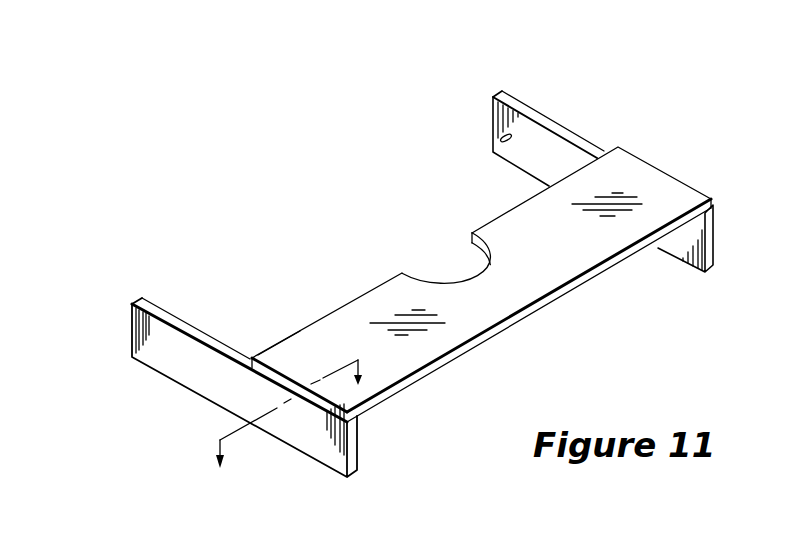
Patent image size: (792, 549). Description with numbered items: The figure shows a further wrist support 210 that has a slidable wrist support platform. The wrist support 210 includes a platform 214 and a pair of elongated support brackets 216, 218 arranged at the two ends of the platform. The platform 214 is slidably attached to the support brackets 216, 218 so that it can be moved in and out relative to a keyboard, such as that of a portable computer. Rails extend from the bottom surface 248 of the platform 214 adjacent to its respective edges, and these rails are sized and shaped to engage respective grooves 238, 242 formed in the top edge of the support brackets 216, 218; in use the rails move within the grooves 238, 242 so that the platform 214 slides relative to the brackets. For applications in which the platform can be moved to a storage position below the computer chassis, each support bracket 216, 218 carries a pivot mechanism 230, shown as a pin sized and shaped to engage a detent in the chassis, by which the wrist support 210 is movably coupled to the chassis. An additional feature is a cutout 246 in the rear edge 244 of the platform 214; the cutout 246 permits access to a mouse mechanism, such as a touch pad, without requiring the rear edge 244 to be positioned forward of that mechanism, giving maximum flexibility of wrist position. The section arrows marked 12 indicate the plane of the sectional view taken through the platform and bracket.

The wrist support 210 is at (585, 92).
The platform 214 is at (640, 175).
The support bracket 216 is at (156, 304).
The support bracket 218 is at (531, 109).
The pivot mechanism 230 is at (498, 143).
The groove 238 is at (215, 342).
The groove 242 is at (592, 142).
The rear edge 244 is at (320, 317).
The cutout 246 is at (445, 260).
The bottom surface 248 is at (593, 283).
The section line for FIG. 12 is at (289, 421).